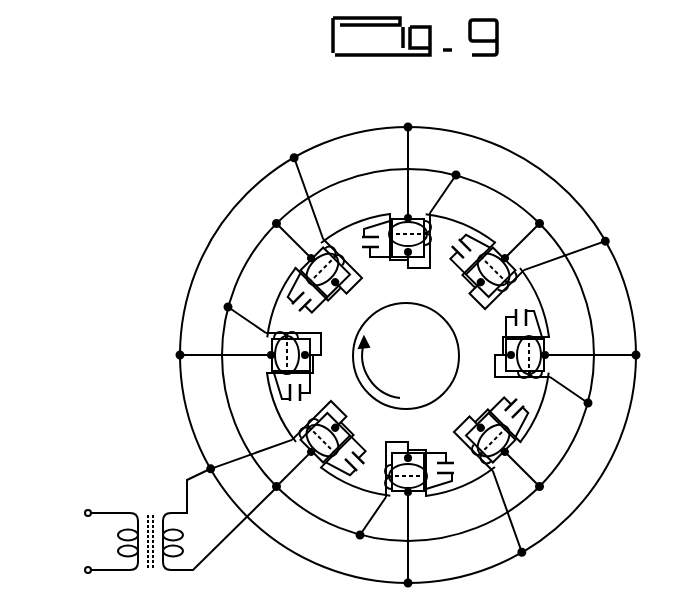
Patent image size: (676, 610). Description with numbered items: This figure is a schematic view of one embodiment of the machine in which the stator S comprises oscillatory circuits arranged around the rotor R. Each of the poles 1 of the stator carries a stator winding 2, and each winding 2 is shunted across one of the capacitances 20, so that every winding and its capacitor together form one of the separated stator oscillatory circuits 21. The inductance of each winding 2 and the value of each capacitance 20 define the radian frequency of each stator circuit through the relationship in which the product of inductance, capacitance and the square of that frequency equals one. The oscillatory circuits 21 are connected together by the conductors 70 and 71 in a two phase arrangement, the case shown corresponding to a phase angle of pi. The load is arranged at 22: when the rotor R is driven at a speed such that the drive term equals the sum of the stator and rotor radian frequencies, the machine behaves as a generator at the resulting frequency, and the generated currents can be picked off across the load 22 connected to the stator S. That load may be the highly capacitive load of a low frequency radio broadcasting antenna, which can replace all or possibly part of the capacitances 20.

The poles 1 is at (468, 274).
The stator windings 2 is at (371, 248).
The capacitances 20 is at (510, 322).
The stator oscillatory circuits 21 is at (314, 256).
The load 22 is at (75, 537).
The conductor 70 is at (571, 449).
The conductor 71 is at (584, 503).
The stator S is at (465, 222).
The rotor R is at (457, 378).